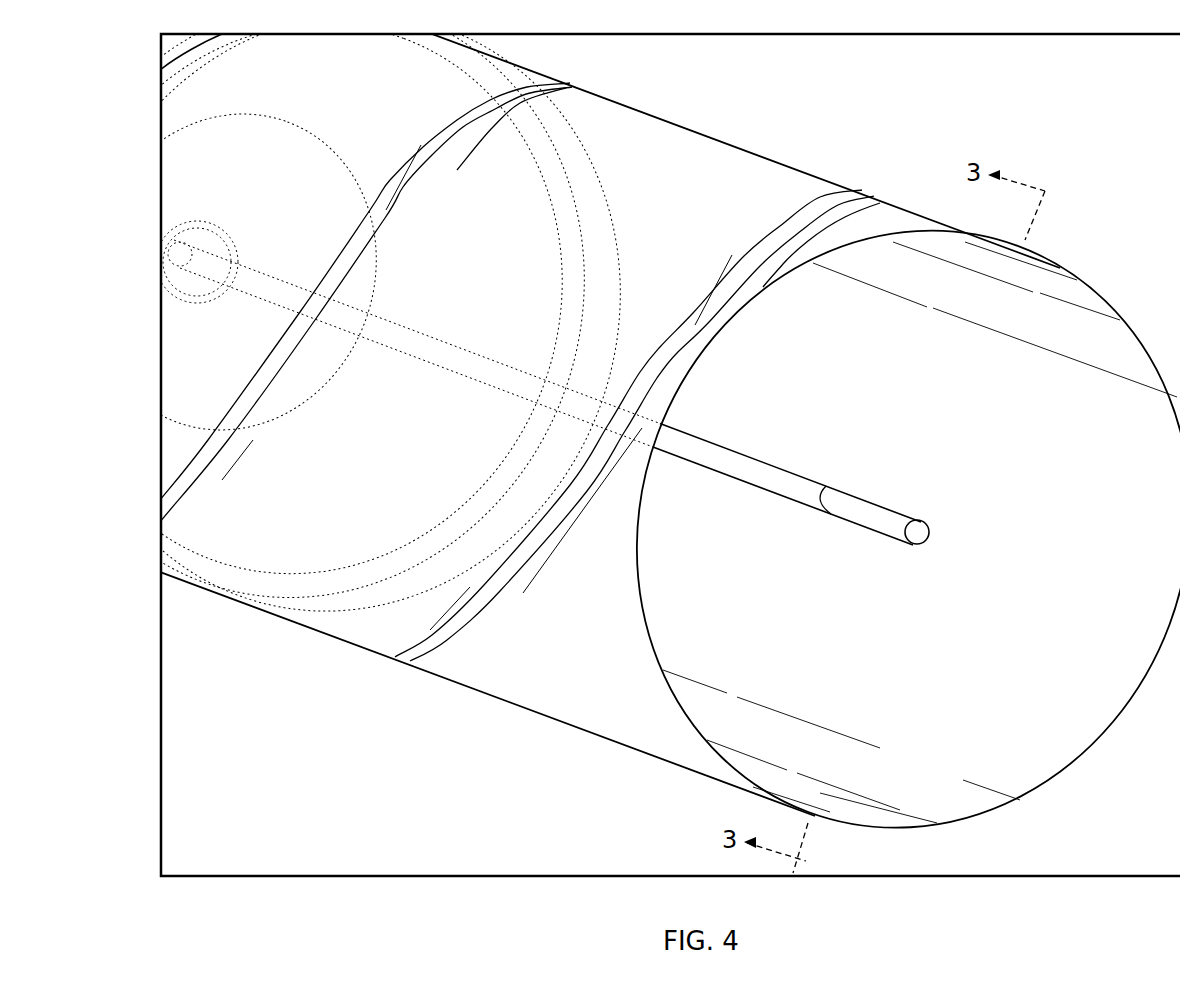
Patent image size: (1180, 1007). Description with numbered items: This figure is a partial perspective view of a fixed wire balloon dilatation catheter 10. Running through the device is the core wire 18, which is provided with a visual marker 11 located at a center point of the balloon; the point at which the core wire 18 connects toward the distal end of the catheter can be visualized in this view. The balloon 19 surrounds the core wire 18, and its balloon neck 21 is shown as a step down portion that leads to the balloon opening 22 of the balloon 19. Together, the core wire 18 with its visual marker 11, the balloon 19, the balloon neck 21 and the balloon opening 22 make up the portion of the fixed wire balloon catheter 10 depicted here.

The fixed wire balloon catheter 10 is at (1034, 98).
The visual marker 11 is at (862, 508).
The core wire 18 is at (777, 470).
The balloon 19 is at (858, 190).
The balloon neck 21 is at (343, 154).
The balloon opening 22 is at (212, 212).